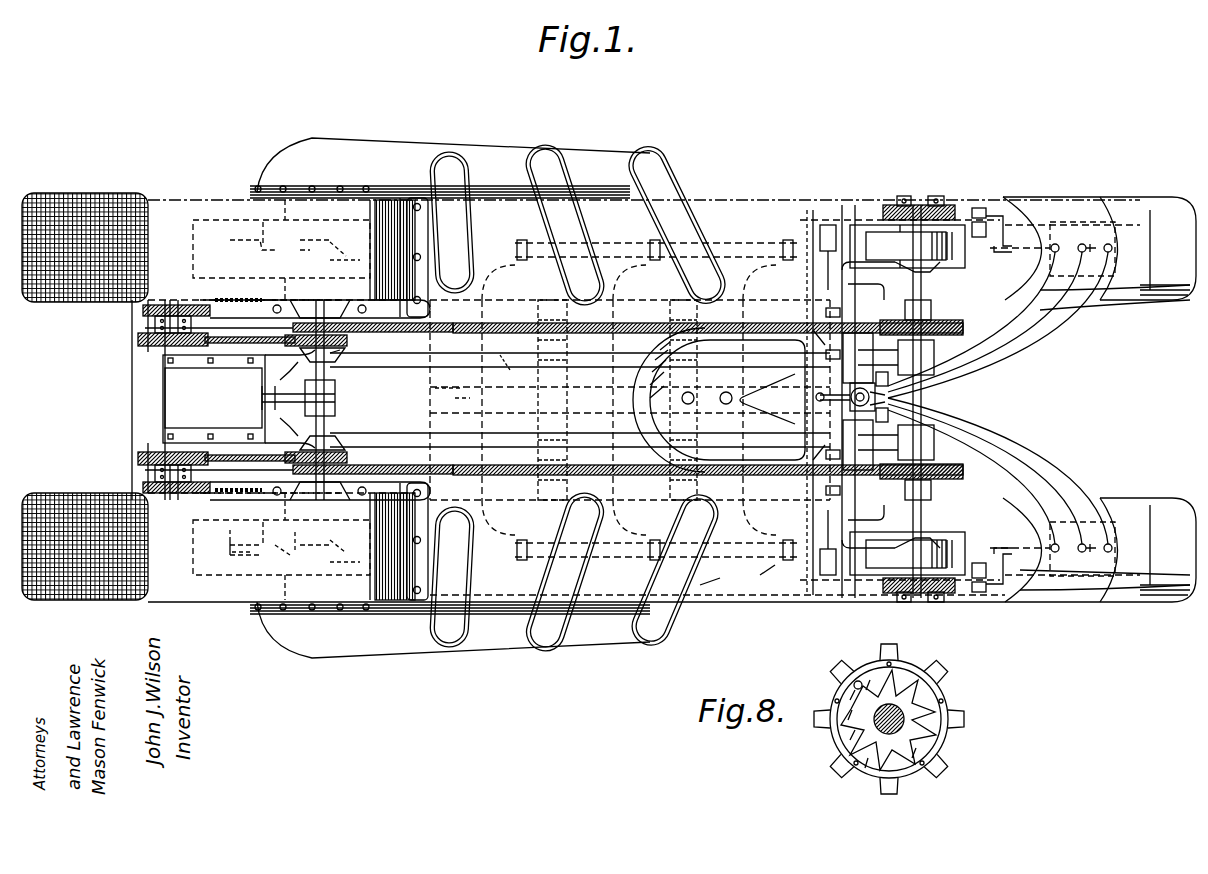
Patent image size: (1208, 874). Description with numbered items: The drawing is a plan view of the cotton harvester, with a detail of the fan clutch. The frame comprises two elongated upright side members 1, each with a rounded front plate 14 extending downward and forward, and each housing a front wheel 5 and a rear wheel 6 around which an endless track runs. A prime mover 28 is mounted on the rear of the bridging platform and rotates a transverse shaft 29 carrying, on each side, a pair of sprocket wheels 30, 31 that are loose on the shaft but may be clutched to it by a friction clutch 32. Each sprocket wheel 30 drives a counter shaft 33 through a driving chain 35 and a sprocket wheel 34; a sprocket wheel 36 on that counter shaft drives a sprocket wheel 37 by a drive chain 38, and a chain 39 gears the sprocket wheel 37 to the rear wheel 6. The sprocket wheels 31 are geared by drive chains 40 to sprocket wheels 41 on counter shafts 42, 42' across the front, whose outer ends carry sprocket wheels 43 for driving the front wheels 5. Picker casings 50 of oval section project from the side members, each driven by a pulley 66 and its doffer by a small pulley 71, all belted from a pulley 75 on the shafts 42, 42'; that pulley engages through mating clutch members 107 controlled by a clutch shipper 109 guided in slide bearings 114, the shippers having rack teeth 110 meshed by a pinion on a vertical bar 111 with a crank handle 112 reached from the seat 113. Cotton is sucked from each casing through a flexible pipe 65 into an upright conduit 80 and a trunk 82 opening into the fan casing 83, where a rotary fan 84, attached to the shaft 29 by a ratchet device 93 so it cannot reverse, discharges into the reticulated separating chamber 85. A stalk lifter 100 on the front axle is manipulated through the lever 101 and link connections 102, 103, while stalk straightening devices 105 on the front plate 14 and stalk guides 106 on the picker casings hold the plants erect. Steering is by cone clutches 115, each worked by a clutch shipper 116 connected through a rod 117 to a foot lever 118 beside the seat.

In FIG. 1, the side member 1 is at (1055, 205).
In FIG. 1, the front wheel 5 is at (1108, 588).
In FIG. 1, the rear wheel 6 is at (195, 562).
In FIG. 1, the curved front plate 14 is at (1070, 588).
In FIG. 1, the prime mover 28 is at (239, 399).
In FIG. 1, the shaft 29 is at (340, 386).
In FIG. 8, the shaft 29 is at (905, 712).
In FIG. 1, the sprocket wheel 30 is at (404, 444).
In FIG. 1, the sprocket wheel 31 is at (368, 462).
In FIG. 1, the friction clutch 32 is at (345, 354).
In FIG. 1, the counter shaft 33 is at (172, 305).
In FIG. 1, the sprocket wheel 34 is at (140, 342).
In FIG. 1, the driving chain 35 is at (250, 396).
In FIG. 1, the sprocket wheel 36 is at (150, 322).
In FIG. 1, the sprocket wheel 37 is at (245, 537).
In FIG. 1, the drive chain 38 is at (215, 304).
In FIG. 1, the chain 39 is at (283, 540).
In FIG. 1, the drive chain 40 is at (462, 335).
In FIG. 1, the sprocket wheel 41 is at (935, 322).
In FIG. 1, the counter shaft 42 is at (922, 413).
In FIG. 1, the counter shaft 42' is at (934, 378).
In FIG. 1, the sprocket wheel 43 is at (950, 205).
In FIG. 1, the picker casing 50 is at (448, 392).
In FIG. 1, the flexible pipe 65 is at (760, 255).
In FIG. 1, the pulley 66 is at (722, 572).
In FIG. 1, the small pulley 71 is at (775, 576).
In FIG. 1, the pulley 75 is at (880, 565).
In FIG. 1, the upright conduit 80 is at (570, 222).
In FIG. 1, the trunk 82 is at (455, 150).
In FIG. 1, the fan casing 83 is at (190, 200).
In FIG. 1, the rotary fan 84 is at (300, 565).
In FIG. 8, the rotary fan 84 is at (935, 760).
In FIG. 1, the reticulated separating chamber 85 is at (50, 302).
In FIG. 1, the ratchet device 93 is at (347, 402).
In FIG. 8, the ratchet device 93 is at (915, 733).
In FIG. 1, the stalk lifter 100 is at (1135, 232).
In FIG. 1, the lever 101 is at (820, 318).
In FIG. 1, the link connection 102 is at (845, 230).
In FIG. 1, the link connection 103 is at (1000, 225).
In FIG. 1, the stalk straightening device 105 is at (1025, 338).
In FIG. 1, the stalk guide 106 is at (452, 383).
In FIG. 1, the clutch member 107 is at (918, 196).
In FIG. 1, the clutch shipper 109 is at (868, 405).
In FIG. 1, the rack teeth 110 is at (872, 392).
In FIG. 1, the vertical bar 111 is at (858, 401).
In FIG. 1, the crank handle 112 is at (831, 395).
In FIG. 1, the seat 113 is at (719, 400).
In FIG. 1, the slide bearing 114 is at (840, 312).
In FIG. 1, the cone clutch 115 is at (382, 343).
In FIG. 1, the clutch shipper 116 is at (282, 390).
In FIG. 1, the rod 117 is at (503, 355).
In FIG. 1, the foot lever 118 is at (900, 380).